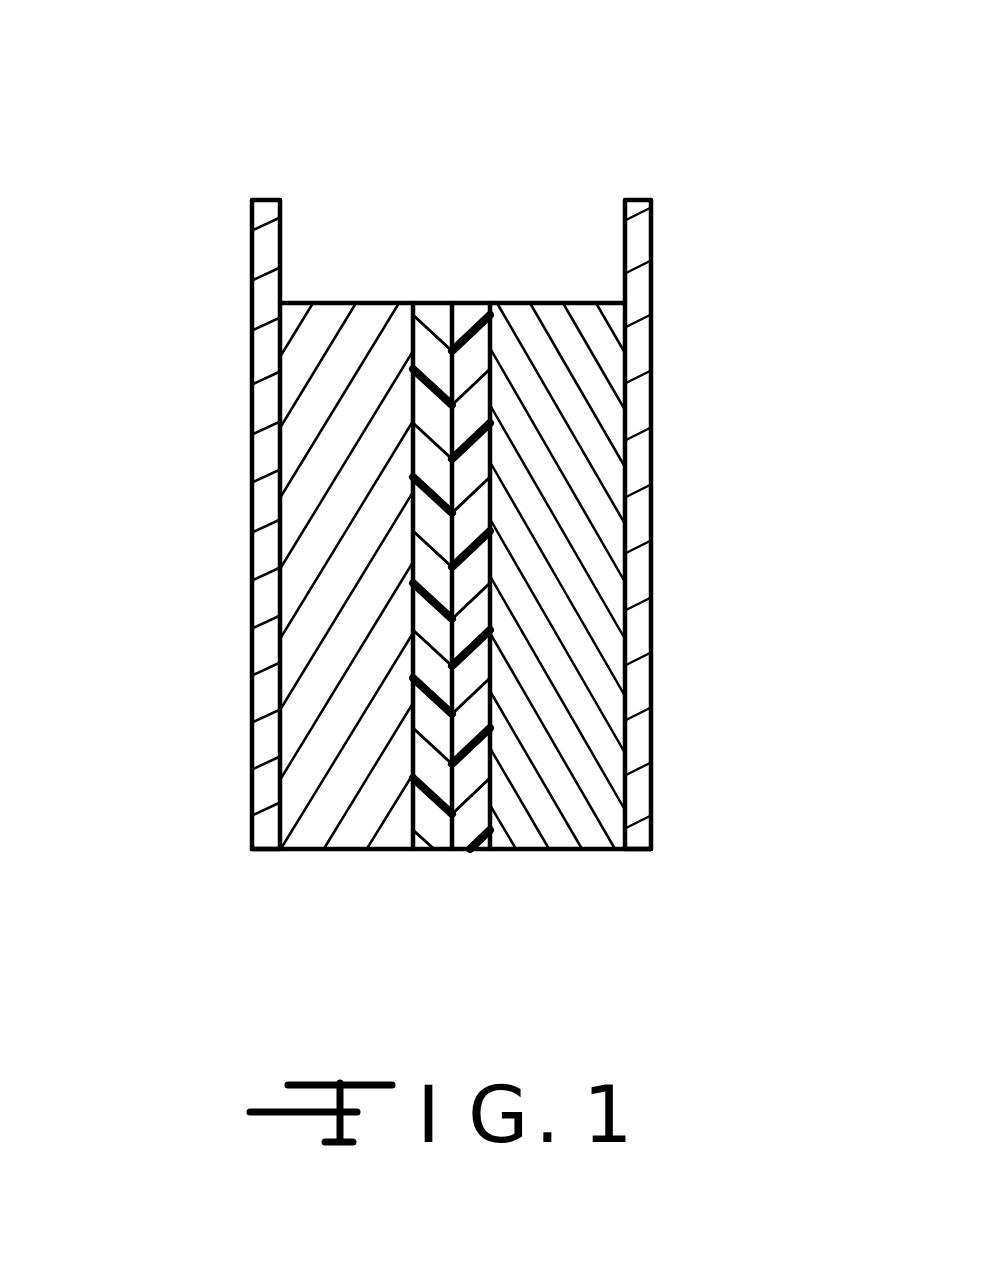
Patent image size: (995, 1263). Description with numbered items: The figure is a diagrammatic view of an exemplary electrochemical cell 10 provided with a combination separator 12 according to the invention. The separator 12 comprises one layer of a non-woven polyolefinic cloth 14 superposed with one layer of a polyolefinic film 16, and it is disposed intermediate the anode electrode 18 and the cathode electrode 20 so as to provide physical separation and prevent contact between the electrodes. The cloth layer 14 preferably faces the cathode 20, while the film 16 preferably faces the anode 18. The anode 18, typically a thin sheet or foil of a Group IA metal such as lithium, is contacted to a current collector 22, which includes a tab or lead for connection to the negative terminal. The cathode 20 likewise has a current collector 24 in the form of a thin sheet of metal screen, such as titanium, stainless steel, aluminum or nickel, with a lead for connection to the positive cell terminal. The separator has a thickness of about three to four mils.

The electrochemical cell 10 is at (703, 135).
The separator 12 is at (446, 568).
The non-woven polyolefinic cloth 14 is at (476, 316).
The polyolefinic film 16 is at (430, 316).
The anode electrode 18 is at (310, 853).
The cathode electrode 20 is at (569, 848).
The current collector 22 is at (266, 398).
The current collector 24 is at (654, 295).